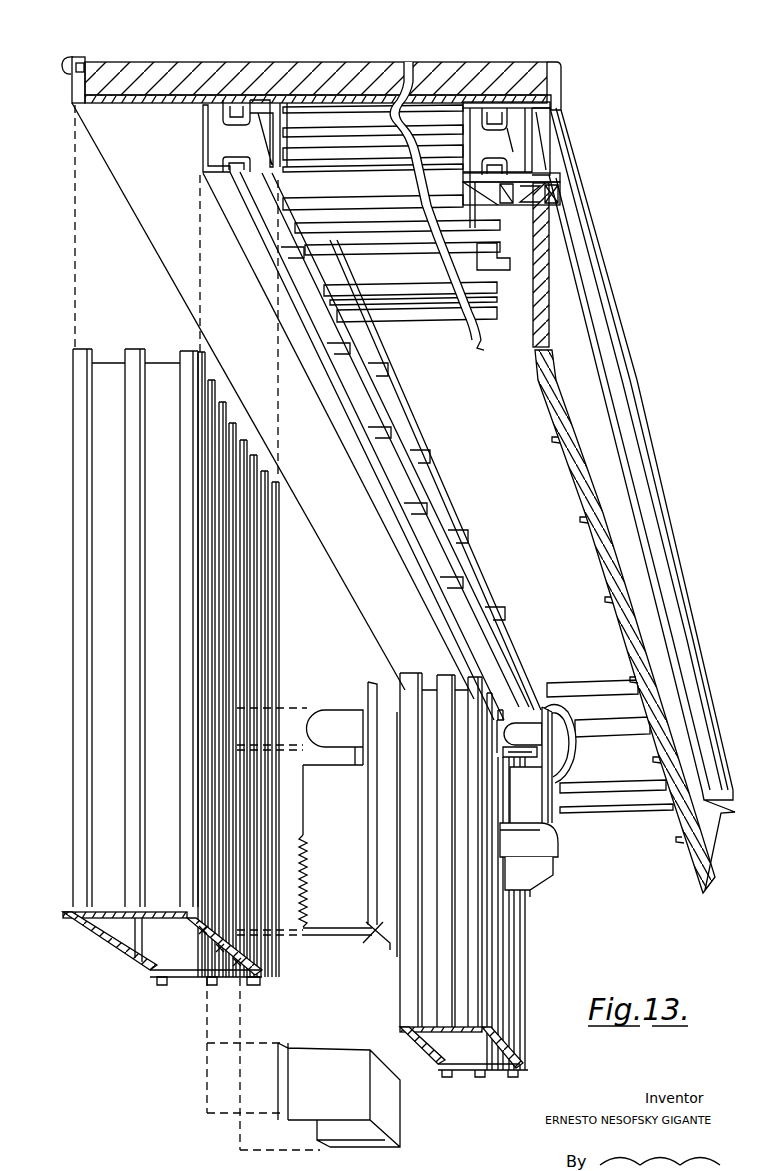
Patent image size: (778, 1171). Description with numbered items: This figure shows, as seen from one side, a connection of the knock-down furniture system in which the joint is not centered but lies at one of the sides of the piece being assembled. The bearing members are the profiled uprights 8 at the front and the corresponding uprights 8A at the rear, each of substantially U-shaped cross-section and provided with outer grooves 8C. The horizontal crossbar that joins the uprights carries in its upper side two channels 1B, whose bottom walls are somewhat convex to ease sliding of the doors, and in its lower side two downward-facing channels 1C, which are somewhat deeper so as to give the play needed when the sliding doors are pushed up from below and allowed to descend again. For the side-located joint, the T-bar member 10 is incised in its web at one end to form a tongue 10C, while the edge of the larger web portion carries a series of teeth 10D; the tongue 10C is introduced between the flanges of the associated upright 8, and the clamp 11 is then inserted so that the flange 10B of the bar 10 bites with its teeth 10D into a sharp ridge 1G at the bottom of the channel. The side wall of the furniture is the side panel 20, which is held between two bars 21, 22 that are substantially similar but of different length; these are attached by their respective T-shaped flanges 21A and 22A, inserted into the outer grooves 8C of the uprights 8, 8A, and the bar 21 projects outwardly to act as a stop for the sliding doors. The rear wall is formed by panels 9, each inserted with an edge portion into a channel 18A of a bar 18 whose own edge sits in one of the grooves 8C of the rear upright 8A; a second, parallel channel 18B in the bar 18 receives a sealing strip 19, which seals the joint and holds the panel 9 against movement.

The side panel 20 is at (438, 79).
The bar 21 is at (72, 57).
The T-shaped flange 21A is at (238, 108).
The bar 22 is at (560, 84).
The T-shaped flange 22A is at (497, 118).
The upright 8 is at (392, 462).
The upright 8A is at (541, 160).
The outer groove 8C is at (223, 110).
The bar 18 is at (477, 223).
The channel 18A is at (556, 191).
The channel 18B is at (556, 206).
The sealing strip 19 is at (530, 237).
The panel 9 is at (568, 330).
The T-bar member 10 is at (372, 932).
The flange 10B is at (310, 810).
The tongue 10C is at (338, 712).
The teeth 10D is at (300, 908).
The clamp 11 is at (392, 1120).
The channel 1B is at (465, 1019).
The channel 1C is at (505, 1080).
The sharp ridge 1G is at (213, 948).